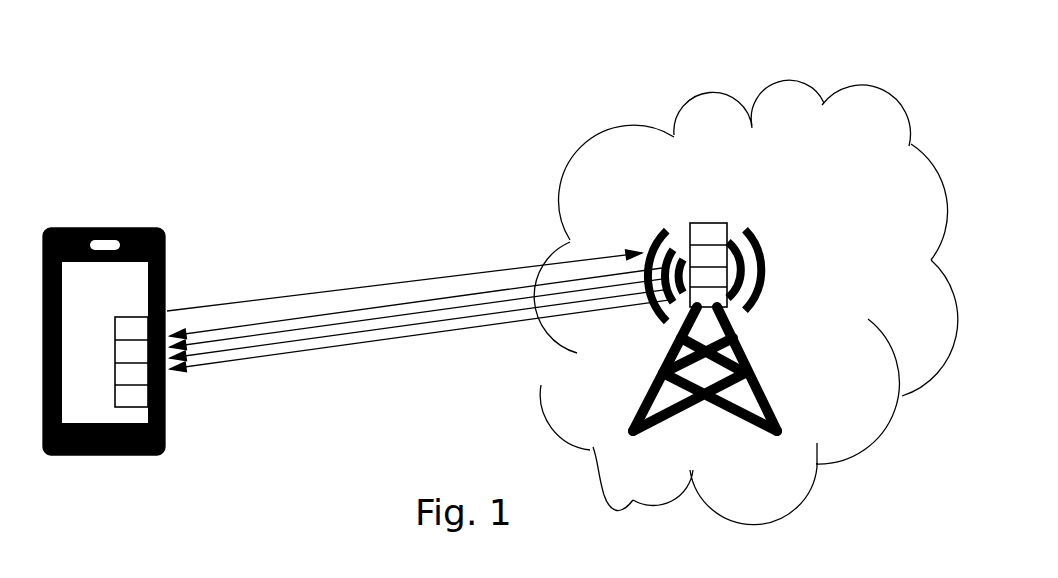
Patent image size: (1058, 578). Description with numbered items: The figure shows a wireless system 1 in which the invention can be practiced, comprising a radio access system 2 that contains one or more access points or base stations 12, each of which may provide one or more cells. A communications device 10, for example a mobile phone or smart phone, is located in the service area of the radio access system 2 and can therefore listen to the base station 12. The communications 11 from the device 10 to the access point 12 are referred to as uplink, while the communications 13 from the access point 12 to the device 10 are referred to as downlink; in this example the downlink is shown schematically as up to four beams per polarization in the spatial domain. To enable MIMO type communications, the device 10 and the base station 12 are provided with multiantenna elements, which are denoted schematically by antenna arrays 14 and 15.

The wireless system 1 is at (507, 100).
The radio access system 2 is at (690, 148).
The communications device 10 is at (110, 282).
The communications from the device to the access point 11 is at (405, 283).
The base station 12 is at (730, 400).
The communications from the access point to the device 13 is at (316, 363).
The antenna array 14 is at (712, 223).
The antenna array 15 is at (143, 377).